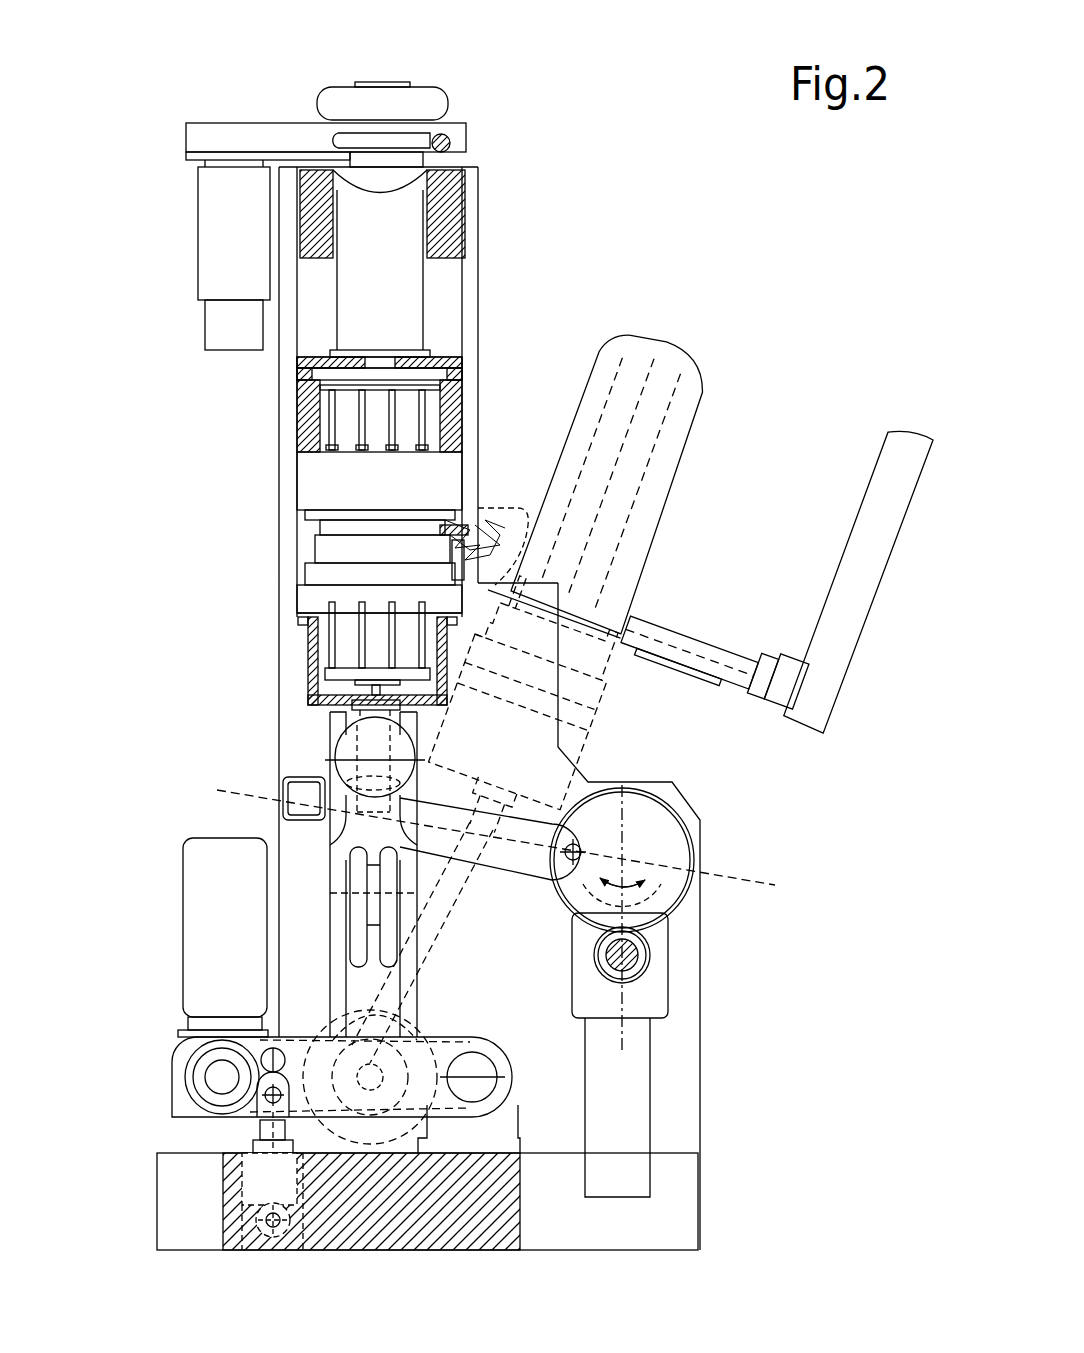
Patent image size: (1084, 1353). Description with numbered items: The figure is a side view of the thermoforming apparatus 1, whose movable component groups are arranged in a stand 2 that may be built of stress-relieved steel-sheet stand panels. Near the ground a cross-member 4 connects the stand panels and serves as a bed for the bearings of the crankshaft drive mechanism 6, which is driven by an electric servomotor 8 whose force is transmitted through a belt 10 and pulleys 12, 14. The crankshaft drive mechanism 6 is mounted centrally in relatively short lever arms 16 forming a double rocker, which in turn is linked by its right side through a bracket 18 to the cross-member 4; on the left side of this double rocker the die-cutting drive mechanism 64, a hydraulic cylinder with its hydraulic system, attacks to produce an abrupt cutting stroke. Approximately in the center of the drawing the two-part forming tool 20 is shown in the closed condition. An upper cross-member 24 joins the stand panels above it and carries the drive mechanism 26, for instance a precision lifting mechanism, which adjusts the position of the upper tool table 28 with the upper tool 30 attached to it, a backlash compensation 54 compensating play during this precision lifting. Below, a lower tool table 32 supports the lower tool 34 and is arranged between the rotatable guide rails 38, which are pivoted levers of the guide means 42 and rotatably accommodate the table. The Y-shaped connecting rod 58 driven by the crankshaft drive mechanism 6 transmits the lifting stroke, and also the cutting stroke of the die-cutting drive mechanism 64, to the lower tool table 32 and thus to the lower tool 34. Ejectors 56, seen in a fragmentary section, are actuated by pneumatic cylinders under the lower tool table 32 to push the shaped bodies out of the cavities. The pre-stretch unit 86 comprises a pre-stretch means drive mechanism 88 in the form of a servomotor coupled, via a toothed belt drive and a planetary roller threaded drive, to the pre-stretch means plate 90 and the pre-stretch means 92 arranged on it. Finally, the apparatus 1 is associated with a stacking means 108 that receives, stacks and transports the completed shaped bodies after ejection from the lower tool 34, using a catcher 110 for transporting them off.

The thermoforming apparatus 1 is at (260, 75).
The stand 2 is at (290, 666).
The cross-member 4 is at (425, 1217).
The crankshaft drive mechanism 6 is at (392, 1140).
The electric servomotor 8 is at (235, 953).
The belt 10 is at (320, 1140).
The pulley 12 is at (195, 1080).
The pulley 14 is at (470, 1063).
The lever arms 16 is at (447, 1107).
The bracket 18 is at (490, 1135).
The two-part forming tool 20 is at (262, 478).
The cross-member 24 is at (450, 220).
The drive mechanism 26 is at (450, 143).
The upper tool table 28 is at (300, 360).
The upper tool 30 is at (325, 492).
The lower tool table 32 is at (310, 630).
The lower tool 34 is at (330, 548).
The rotatable guide rails 38 is at (330, 985).
The guide means 42 is at (165, 842).
The backlash compensation 54 is at (440, 92).
The ejectors 56 is at (340, 675).
The connecting rod 58 is at (358, 908).
The die-cutting drive mechanism 64 is at (262, 1148).
The pre-stretch unit 86 is at (400, 315).
The pre-stretch means drive mechanism 88 is at (228, 237).
The pre-stretch means plate 90 is at (335, 390).
The pre-stretch means 92 is at (335, 445).
The stacking means 108 is at (680, 410).
The catcher 110 is at (721, 684).